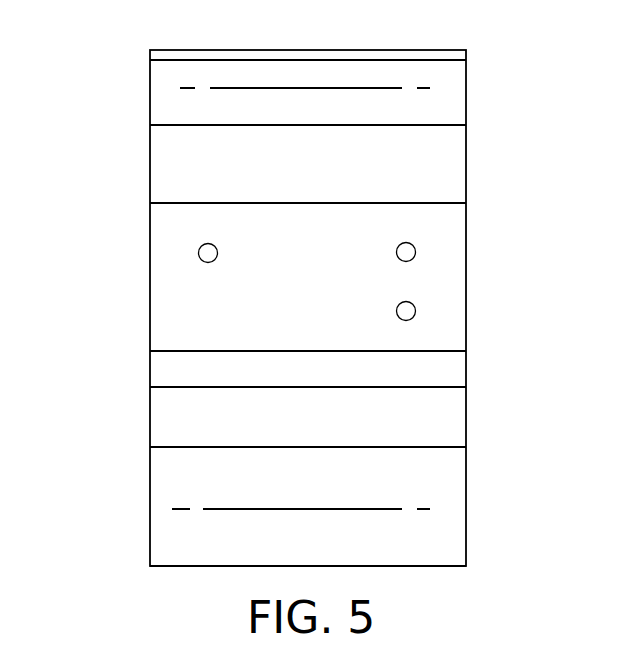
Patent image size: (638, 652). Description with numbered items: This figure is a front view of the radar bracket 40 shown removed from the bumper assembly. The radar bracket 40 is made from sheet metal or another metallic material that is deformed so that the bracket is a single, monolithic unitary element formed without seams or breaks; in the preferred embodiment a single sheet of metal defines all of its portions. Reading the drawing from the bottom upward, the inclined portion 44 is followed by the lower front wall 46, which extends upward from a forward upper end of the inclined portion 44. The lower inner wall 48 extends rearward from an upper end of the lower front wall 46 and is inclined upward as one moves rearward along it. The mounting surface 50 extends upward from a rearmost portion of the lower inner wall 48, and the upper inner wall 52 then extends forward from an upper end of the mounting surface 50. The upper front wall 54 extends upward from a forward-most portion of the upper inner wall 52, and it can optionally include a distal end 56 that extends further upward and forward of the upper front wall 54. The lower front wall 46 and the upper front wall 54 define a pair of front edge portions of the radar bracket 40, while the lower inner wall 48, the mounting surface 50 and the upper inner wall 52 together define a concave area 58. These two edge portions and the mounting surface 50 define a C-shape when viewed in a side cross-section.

The radar bracket 40 is at (80, 108).
The inclined portion 44 is at (438, 544).
The lower front wall 46 is at (437, 480).
The lower inner wall 48 is at (429, 418).
The mounting surface 50 is at (311, 297).
The upper inner wall 52 is at (436, 168).
The upper front wall 54 is at (447, 75).
The distal end 56 is at (418, 48).
The concave area 58 is at (201, 303).